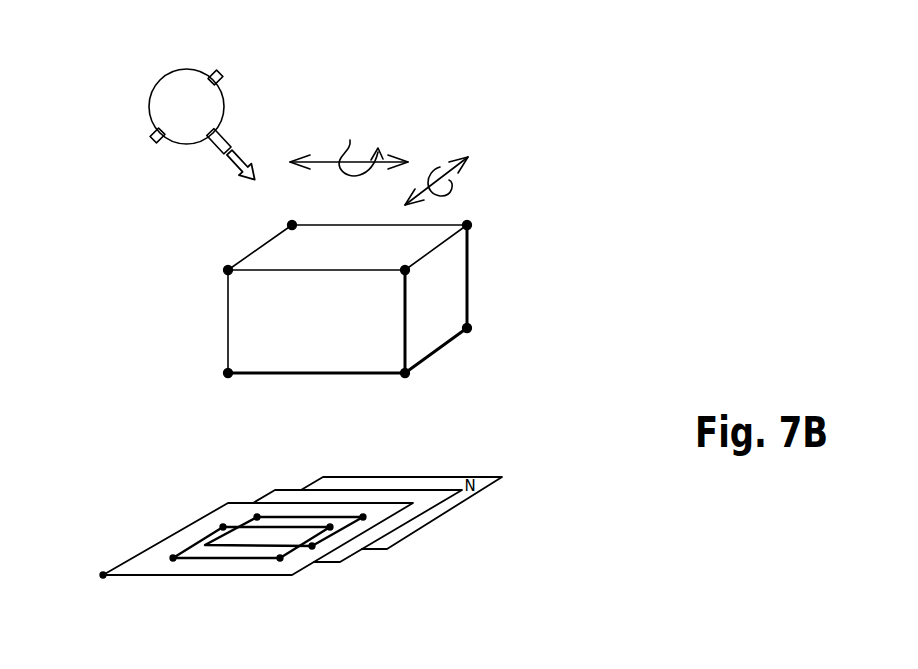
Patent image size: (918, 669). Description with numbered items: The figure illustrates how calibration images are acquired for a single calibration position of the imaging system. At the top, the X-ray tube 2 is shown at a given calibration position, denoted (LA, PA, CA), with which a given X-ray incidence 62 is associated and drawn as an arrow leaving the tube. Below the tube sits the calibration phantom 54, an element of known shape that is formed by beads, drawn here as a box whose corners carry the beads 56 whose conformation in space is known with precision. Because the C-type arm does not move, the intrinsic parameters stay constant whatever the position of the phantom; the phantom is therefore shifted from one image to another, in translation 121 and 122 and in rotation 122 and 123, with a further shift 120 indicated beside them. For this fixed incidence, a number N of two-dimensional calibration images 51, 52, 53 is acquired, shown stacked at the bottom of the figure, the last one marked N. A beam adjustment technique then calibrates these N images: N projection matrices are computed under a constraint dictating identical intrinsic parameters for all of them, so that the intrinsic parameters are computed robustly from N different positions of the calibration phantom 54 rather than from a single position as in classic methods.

The X-ray tube 2 is at (185, 68).
The X-ray incidence 62 is at (240, 160).
The horizontal translation direction 120 is at (330, 160).
The translation 121 is at (440, 167).
The rotation 122 is at (350, 140).
The rotation 123 is at (450, 185).
The calibration phantom 54 is at (470, 288).
The cube corner marker points 56 is at (290, 225).
The calibration image 51 is at (300, 574).
The calibration image 52 is at (352, 555).
The calibration image 53 is at (433, 520).